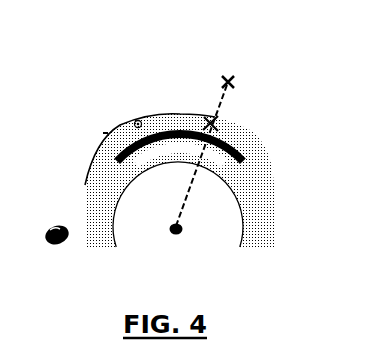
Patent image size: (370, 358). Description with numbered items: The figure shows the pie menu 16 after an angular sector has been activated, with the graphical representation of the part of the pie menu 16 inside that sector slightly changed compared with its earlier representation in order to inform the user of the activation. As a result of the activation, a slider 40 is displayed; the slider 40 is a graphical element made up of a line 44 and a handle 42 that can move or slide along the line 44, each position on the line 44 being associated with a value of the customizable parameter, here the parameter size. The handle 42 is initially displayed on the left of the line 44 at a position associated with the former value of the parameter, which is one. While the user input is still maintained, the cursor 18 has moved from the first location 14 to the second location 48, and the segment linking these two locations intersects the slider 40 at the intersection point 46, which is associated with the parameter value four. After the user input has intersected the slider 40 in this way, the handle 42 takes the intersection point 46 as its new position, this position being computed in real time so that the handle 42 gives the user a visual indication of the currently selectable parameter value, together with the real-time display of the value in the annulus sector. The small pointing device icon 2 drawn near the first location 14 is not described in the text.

The cursor icon 2 is at (82, 240).
The first location 14 is at (176, 226).
The pie menu 16 is at (237, 164).
The cursor 18 is at (230, 80).
The slider 40 is at (251, 120).
The handle 42 is at (133, 118).
The line 44 is at (164, 117).
The intersection point 46 is at (210, 122).
The second location 48 is at (227, 80).